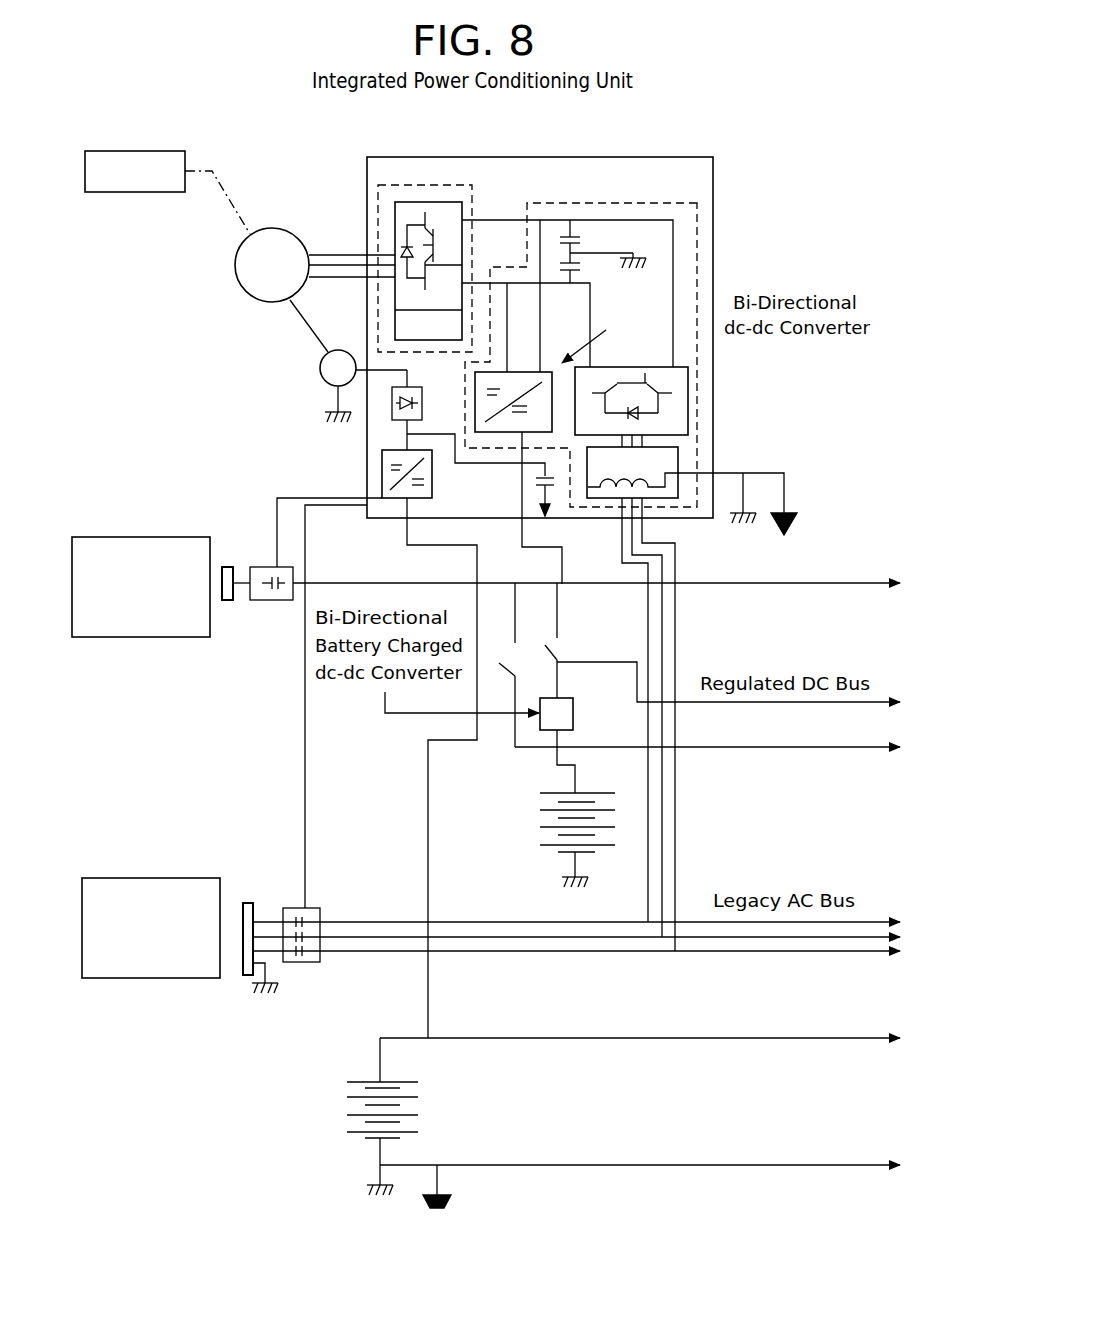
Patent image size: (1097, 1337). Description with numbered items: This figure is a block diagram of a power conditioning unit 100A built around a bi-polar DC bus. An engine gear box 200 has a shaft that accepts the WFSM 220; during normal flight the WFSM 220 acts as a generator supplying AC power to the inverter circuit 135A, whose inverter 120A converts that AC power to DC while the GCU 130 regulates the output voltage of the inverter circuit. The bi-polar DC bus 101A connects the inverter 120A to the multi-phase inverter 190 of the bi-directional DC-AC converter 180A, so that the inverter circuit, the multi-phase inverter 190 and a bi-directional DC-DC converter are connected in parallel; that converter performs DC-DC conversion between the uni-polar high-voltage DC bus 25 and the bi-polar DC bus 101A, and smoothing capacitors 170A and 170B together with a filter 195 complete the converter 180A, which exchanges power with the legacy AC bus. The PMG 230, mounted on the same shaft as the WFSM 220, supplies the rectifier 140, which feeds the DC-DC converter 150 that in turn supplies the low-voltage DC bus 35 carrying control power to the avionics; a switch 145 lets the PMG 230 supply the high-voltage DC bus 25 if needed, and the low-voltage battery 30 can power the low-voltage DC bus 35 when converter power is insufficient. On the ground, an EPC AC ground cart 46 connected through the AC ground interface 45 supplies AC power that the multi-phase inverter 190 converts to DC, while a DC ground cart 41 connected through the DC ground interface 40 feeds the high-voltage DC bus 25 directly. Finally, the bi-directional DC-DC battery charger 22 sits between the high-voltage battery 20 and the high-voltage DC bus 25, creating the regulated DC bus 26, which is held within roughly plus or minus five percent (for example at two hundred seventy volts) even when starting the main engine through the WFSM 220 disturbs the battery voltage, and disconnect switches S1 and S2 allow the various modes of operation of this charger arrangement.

The integrated power conditioning unit 100A is at (748, 159).
The bi-polar DC bus 101A is at (495, 220).
The inverter 120A is at (447, 202).
The GCU 130 is at (394, 322).
The inverter circuit 135A is at (392, 185).
The rectifier 140 is at (393, 418).
The switch 145 is at (428, 432).
The DC-DC converter 150 is at (382, 488).
The smoothing capacitor 170A is at (578, 228).
The smoothing capacitor 170B is at (582, 267).
The bi-directional DC-AC converter 180A is at (698, 235).
The multi-phase inverter 190 is at (689, 374).
The filter 195 is at (680, 457).
The engine gear box 200 is at (146, 192).
The WFSM 220 is at (236, 282).
The PMG 230 is at (325, 388).
The high-voltage battery 20 is at (607, 838).
The bi-directional DC-DC battery charger 22 is at (575, 707).
The high-voltage DC bus 25 is at (813, 584).
The regulated DC bus 26 is at (873, 749).
The low-voltage battery 30 is at (350, 1133).
The low-voltage DC bus 35 is at (832, 1040).
The DC ground interface 40 is at (263, 602).
The DC ground cart 41 is at (193, 537).
The AC ground interface 45 is at (305, 962).
The EPC AC ground cart 46 is at (193, 878).
The disconnect switch S1 is at (553, 647).
The disconnect switch S2 is at (507, 665).